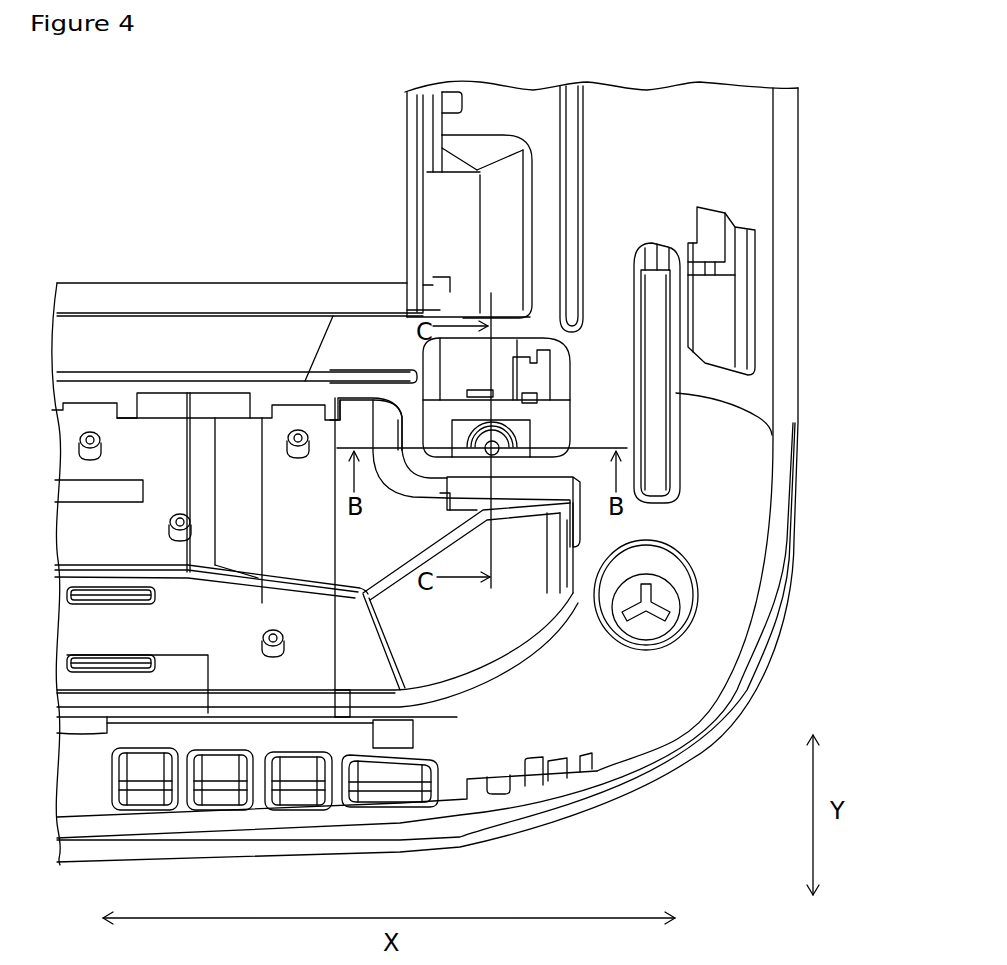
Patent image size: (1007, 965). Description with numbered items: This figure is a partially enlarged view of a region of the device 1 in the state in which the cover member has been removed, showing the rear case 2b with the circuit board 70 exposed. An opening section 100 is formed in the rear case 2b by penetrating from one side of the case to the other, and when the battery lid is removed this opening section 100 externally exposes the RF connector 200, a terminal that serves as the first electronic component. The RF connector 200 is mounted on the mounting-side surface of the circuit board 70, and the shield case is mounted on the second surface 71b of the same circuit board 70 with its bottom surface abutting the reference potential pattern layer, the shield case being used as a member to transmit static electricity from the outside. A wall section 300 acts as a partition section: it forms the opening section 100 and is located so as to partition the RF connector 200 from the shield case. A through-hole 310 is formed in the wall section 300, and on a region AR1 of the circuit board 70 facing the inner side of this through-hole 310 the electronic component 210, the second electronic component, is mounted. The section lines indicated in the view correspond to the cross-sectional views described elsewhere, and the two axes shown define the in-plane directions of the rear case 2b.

The electronic device 1 is at (812, 627).
The rear case 2b is at (747, 502).
The circuit board 70 is at (343, 432).
The second surface 71b is at (260, 420).
The opening section 100 is at (567, 363).
The RF connector 200 is at (527, 443).
The electronic component 210 is at (527, 310).
The wall section 300 is at (467, 353).
The through-hole 310 is at (540, 378).
The region AR1 is at (418, 428).